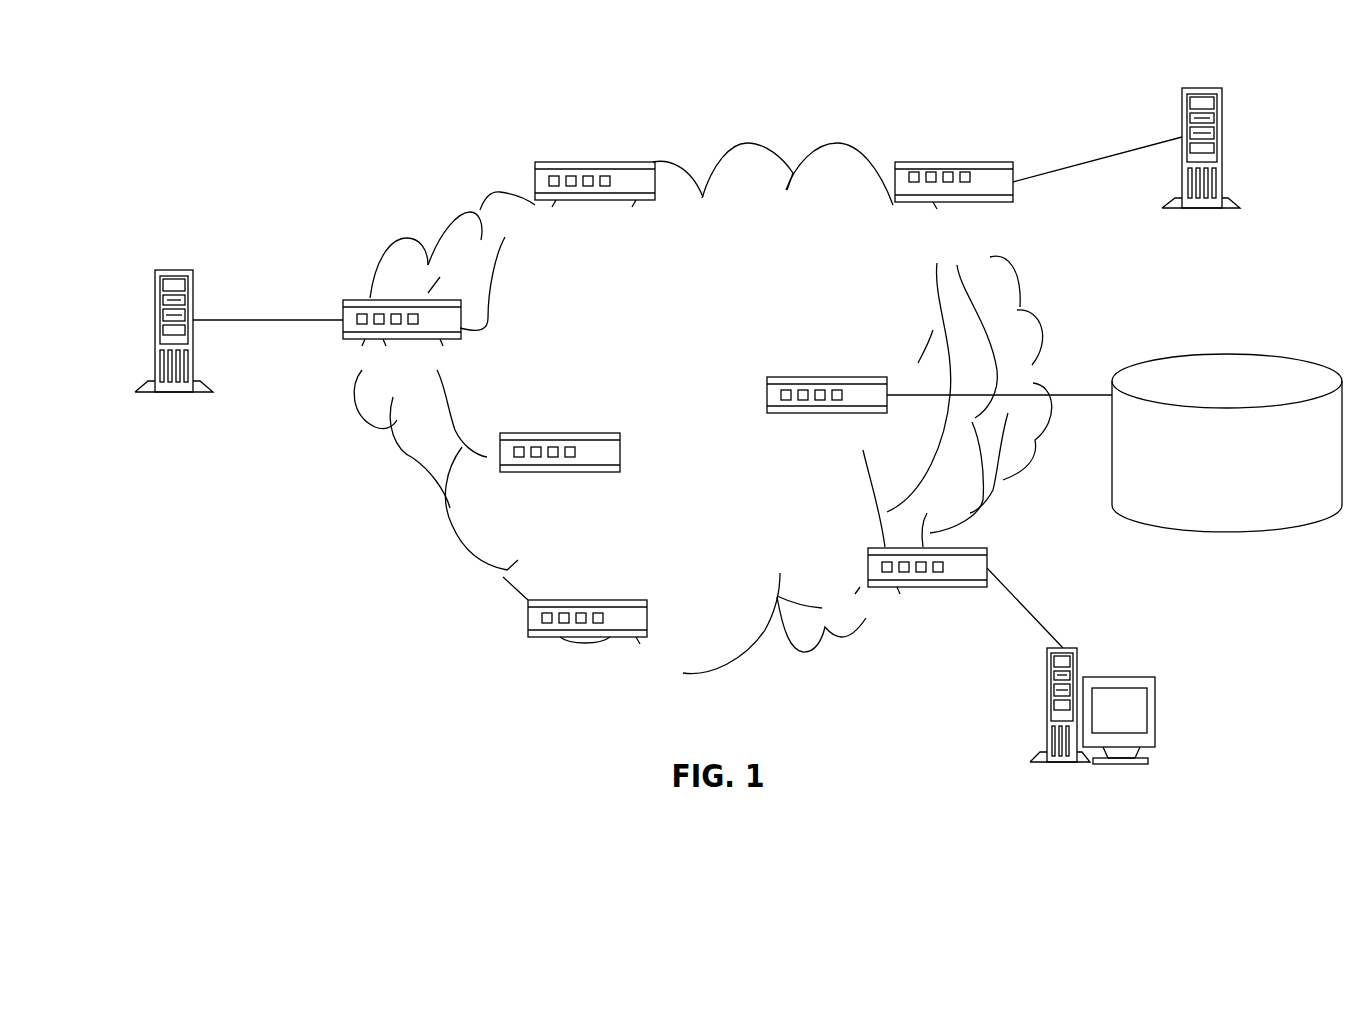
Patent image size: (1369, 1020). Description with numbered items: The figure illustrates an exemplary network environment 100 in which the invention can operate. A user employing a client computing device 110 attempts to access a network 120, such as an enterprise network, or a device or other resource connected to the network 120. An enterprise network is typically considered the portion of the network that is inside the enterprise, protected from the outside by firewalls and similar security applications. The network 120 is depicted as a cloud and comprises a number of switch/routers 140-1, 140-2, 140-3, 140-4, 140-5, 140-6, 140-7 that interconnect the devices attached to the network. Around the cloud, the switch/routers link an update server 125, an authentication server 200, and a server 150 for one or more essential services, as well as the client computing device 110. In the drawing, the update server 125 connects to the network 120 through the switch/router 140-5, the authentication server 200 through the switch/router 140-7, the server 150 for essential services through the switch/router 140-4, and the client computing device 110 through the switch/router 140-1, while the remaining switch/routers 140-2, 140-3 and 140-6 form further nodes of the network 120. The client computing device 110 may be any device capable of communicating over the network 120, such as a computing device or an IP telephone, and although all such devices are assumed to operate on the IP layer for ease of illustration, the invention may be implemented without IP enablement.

The network environment 100 is at (326, 137).
The client computing device 110 is at (1092, 737).
The network 120 is at (634, 352).
The update server 125 is at (175, 360).
The switch/router 140-1 is at (917, 597).
The switch/router 140-2 is at (587, 649).
The switch/router 140-3 is at (560, 482).
The switch/router 140-4 is at (825, 426).
The switch/router 140-5 is at (399, 350).
The switch/router 140-6 is at (595, 212).
The switch/router 140-7 is at (954, 211).
The server for essential services 150 is at (1225, 532).
The authentication server 200 is at (1203, 191).